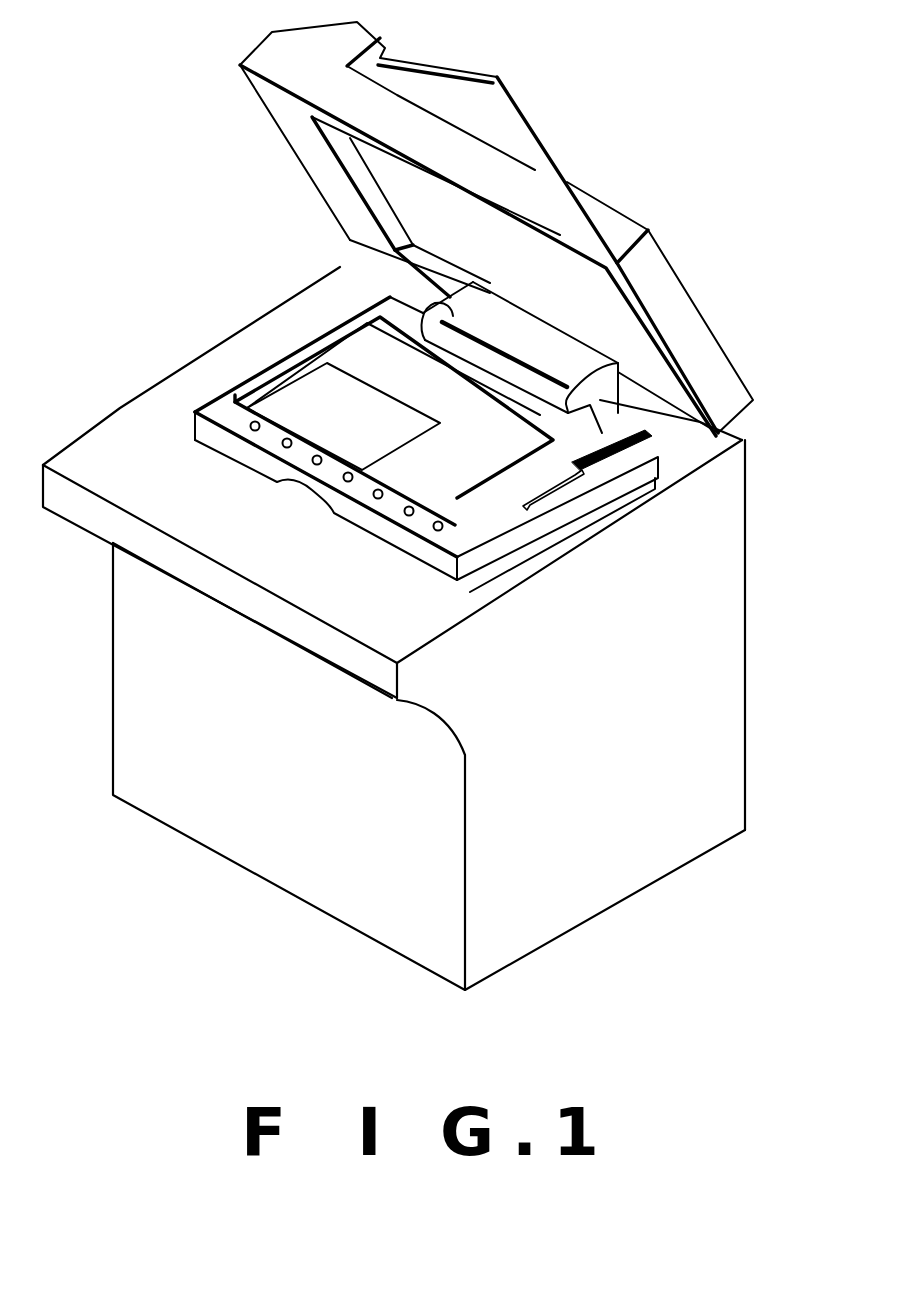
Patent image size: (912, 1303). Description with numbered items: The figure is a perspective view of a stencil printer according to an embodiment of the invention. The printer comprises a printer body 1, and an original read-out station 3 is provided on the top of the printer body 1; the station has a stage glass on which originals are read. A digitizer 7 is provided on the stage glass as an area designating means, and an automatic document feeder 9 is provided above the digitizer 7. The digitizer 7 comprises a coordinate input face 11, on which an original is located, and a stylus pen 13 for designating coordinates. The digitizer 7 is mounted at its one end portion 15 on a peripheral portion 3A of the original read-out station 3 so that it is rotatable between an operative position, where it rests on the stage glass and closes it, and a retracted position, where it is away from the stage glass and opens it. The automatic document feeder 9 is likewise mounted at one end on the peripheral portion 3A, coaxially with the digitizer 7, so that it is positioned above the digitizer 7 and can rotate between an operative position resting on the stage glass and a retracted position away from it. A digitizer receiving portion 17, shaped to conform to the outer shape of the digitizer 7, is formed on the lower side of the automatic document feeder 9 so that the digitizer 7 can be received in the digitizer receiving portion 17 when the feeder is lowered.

The printer body 1 is at (712, 558).
The original read-out station 3 is at (677, 450).
The peripheral portion 3A is at (652, 423).
The digitizer 7 is at (223, 408).
The automatic document feeder 9 is at (270, 62).
The coordinate input face 11 is at (302, 390).
The stylus pen 13 is at (570, 477).
The one end portion 15 is at (453, 317).
The digitizer receiving portion 17 is at (597, 285).